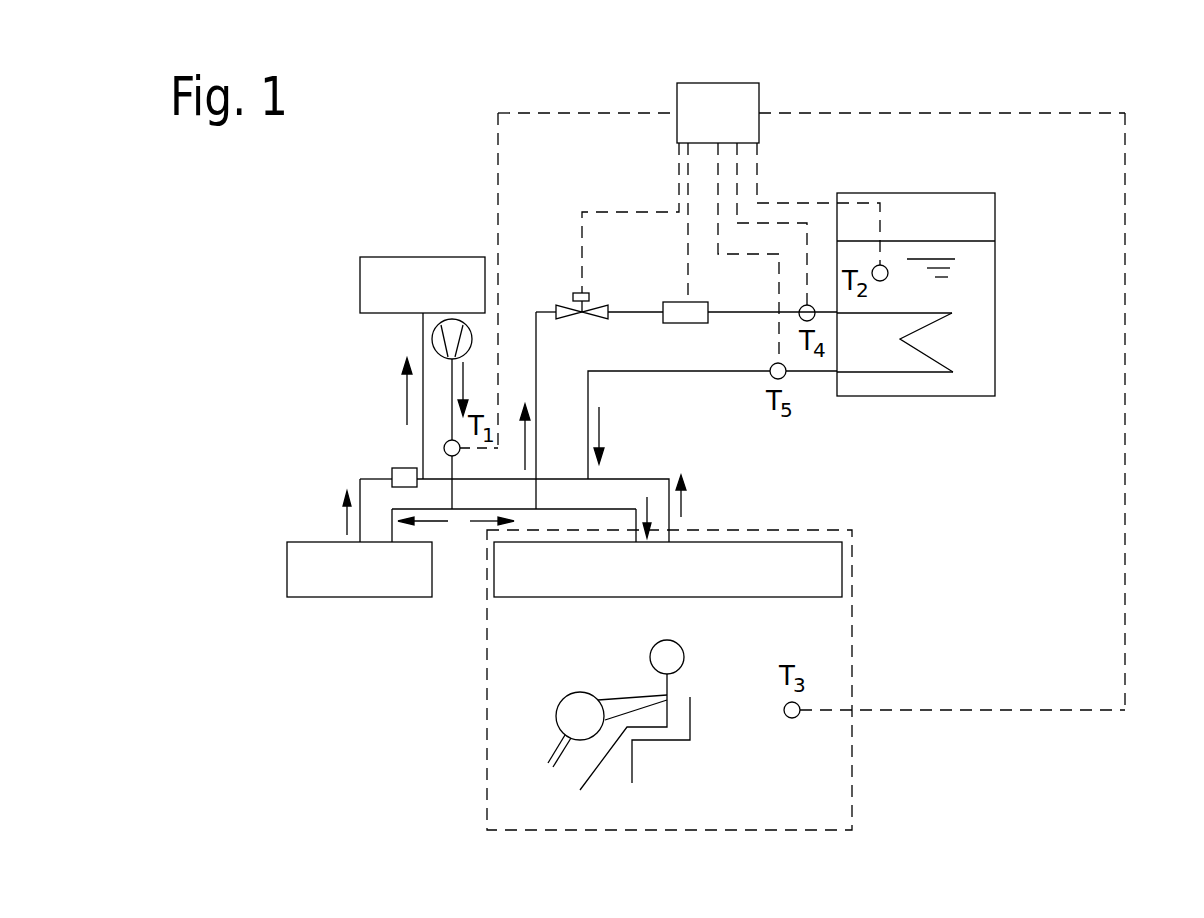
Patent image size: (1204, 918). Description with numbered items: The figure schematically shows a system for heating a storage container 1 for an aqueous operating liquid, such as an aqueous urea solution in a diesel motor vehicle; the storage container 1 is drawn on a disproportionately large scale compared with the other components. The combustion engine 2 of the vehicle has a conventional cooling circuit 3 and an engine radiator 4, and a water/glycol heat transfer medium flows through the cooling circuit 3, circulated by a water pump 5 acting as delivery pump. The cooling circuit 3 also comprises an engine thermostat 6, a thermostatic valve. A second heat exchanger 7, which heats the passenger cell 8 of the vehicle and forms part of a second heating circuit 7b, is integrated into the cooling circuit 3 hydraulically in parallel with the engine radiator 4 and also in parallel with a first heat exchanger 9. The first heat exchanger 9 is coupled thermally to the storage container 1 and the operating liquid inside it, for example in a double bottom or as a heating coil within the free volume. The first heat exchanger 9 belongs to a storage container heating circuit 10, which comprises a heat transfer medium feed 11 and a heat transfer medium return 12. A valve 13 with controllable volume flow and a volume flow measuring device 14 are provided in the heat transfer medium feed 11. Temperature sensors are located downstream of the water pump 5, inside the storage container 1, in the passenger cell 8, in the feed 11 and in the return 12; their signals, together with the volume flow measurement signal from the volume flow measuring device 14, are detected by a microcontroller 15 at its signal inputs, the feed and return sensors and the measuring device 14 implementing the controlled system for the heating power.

The storage container 1 is at (995, 343).
The combustion engine 2 is at (388, 257).
The cooling circuit 3 is at (419, 433).
The engine radiator 4 is at (392, 600).
The water pump 5 is at (470, 337).
The engine thermostat 6 is at (400, 487).
The second heat exchanger 7 is at (790, 550).
The second heating circuit 7b is at (648, 478).
The passenger cell 8 is at (853, 768).
The first heat exchanger 9 is at (938, 358).
The storage container heating circuit 10 is at (590, 388).
The heat transfer medium feed 11 is at (895, 312).
The heat transfer medium return 12 is at (897, 375).
The valve 13 is at (592, 307).
The volume flow measuring device 14 is at (680, 323).
The microcontroller 15 is at (750, 100).